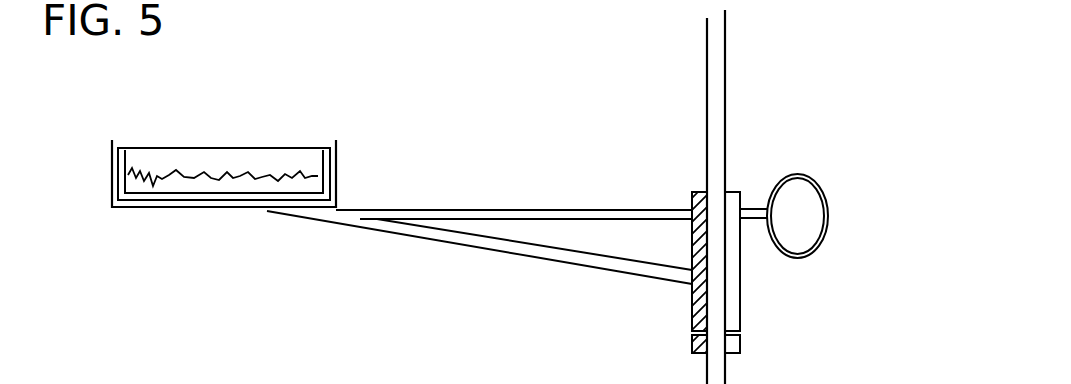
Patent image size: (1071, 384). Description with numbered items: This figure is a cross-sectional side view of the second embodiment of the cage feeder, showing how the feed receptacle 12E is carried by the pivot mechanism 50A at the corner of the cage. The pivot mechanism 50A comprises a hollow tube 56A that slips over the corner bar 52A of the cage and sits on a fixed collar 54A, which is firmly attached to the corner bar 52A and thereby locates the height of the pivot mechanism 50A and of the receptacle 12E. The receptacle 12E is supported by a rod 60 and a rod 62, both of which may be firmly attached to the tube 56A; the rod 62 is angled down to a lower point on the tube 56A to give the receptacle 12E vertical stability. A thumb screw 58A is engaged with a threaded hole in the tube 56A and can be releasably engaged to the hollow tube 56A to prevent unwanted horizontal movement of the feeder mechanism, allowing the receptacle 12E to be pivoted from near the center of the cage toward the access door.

The receptacle 12E is at (112, 170).
The rod 60 is at (498, 210).
The rod 62 is at (501, 254).
The corner bar 52A is at (727, 57).
The pivot mechanism 50A is at (690, 185).
The hollow tube 56A is at (742, 275).
The fixed collar 54A is at (690, 343).
The thumb screw 58A is at (800, 188).